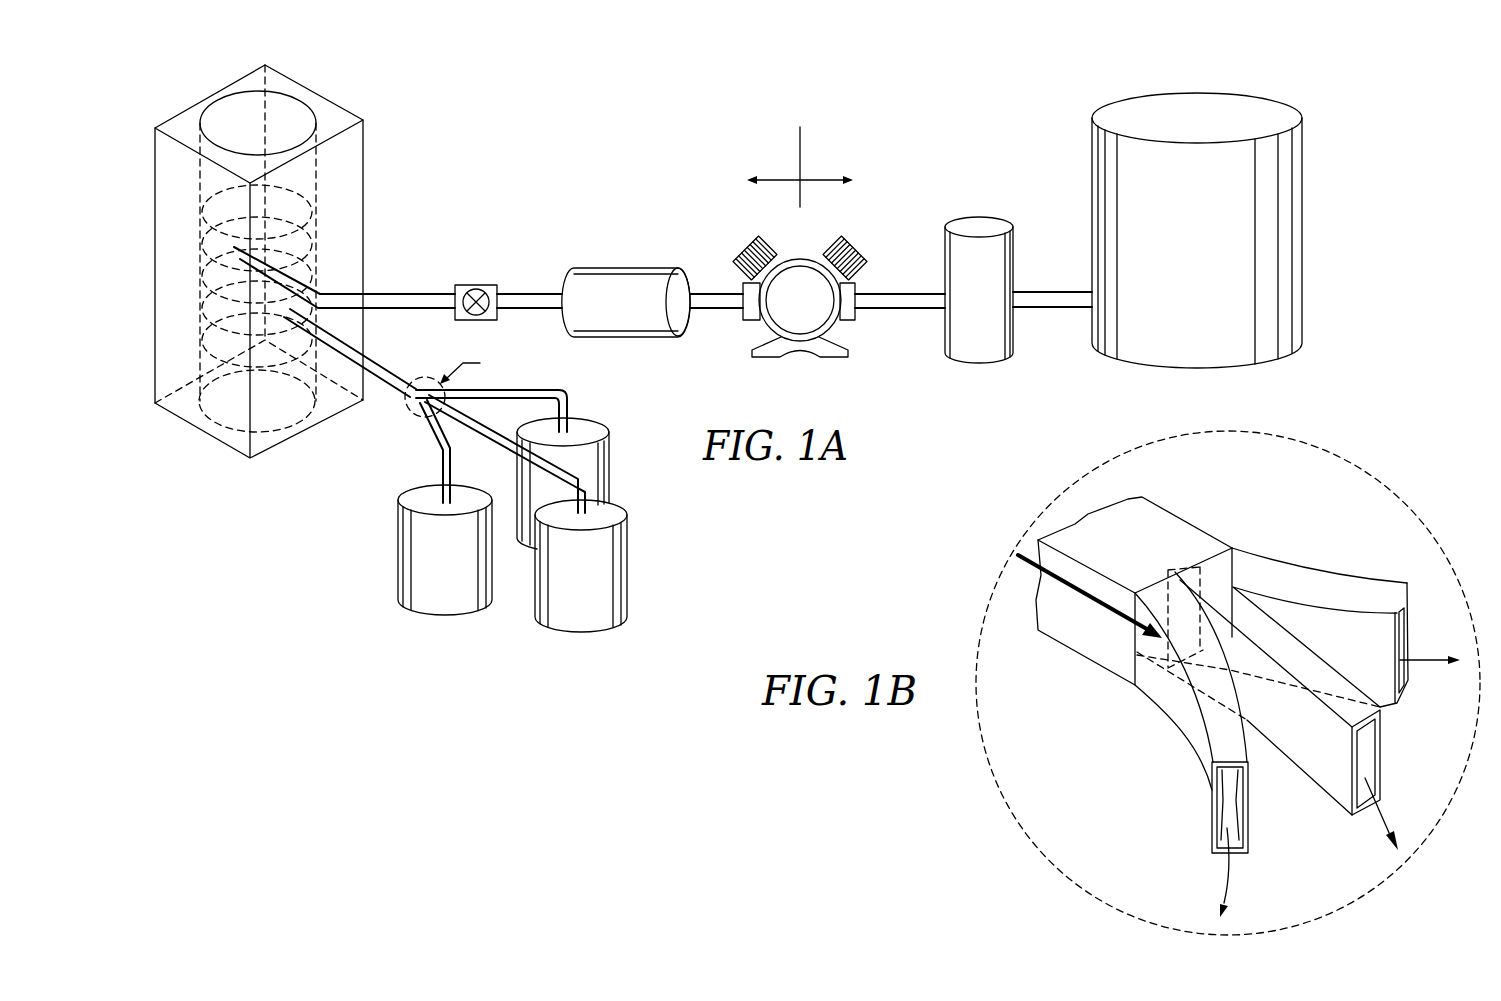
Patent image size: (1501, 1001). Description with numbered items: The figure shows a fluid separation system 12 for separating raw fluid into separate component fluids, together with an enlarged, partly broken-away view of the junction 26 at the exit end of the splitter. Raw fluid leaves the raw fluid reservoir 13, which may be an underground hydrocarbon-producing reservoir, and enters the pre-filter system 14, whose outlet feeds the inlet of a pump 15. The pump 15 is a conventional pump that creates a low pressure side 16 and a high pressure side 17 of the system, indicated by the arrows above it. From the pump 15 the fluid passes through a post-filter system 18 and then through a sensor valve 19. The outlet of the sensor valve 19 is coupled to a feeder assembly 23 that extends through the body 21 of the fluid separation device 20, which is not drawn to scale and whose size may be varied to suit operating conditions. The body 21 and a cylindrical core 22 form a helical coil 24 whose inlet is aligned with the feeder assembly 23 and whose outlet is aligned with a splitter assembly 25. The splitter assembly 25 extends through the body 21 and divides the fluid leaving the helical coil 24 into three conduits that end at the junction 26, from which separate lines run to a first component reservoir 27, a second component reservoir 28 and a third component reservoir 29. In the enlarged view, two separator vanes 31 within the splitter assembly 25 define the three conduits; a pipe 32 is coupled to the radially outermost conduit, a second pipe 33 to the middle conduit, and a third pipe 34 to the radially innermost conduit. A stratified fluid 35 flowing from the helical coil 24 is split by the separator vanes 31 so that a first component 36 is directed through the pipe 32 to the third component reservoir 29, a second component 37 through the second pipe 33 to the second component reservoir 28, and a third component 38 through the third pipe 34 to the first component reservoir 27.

In FIG. 1A, the fluid separation system 12 is at (922, 410).
In FIG. 1A, the raw fluid reservoir 13 is at (1211, 296).
In FIG. 1A, the pre-filter system 14 is at (995, 296).
In FIG. 1A, the pump 15 is at (816, 316).
In FIG. 1A, the low pressure side 16 is at (832, 140).
In FIG. 1A, the high pressure side 17 is at (770, 140).
In FIG. 1A, the post-filter system 18 is at (636, 314).
In FIG. 1A, the sensor valve 19 is at (474, 284).
In FIG. 1A, the fluid separation device 20 is at (392, 126).
In FIG. 1A, the body 21 is at (345, 118).
In FIG. 1A, the cylindrical core 22 is at (217, 115).
In FIG. 1A, the feeder assembly 23 is at (372, 292).
In FIG. 1A, the helical coil 24 is at (185, 272).
In FIG. 1A, the splitter assembly 25 is at (347, 344).
In FIG. 1A, the junction 26 is at (410, 404).
In FIG. 1B, the junction 26 is at (1418, 530).
In FIG. 1A, the first component reservoir 27 is at (415, 498).
In FIG. 1A, the second component reservoir 28 is at (627, 507).
In FIG. 1A, the third component reservoir 29 is at (602, 427).
In FIG. 1B, the separator vanes 31 is at (1186, 577).
In FIG. 1B, the pipe 32 is at (1295, 580).
In FIG. 1B, the second pipe 33 is at (1344, 690).
In FIG. 1B, the third pipe 34 is at (1190, 755).
In FIG. 1B, the stratified fluid 35 is at (1169, 522).
In FIG. 1B, the first component 36 is at (1425, 655).
In FIG. 1B, the second component 37 is at (1387, 822).
In FIG. 1B, the third component 38 is at (1240, 897).